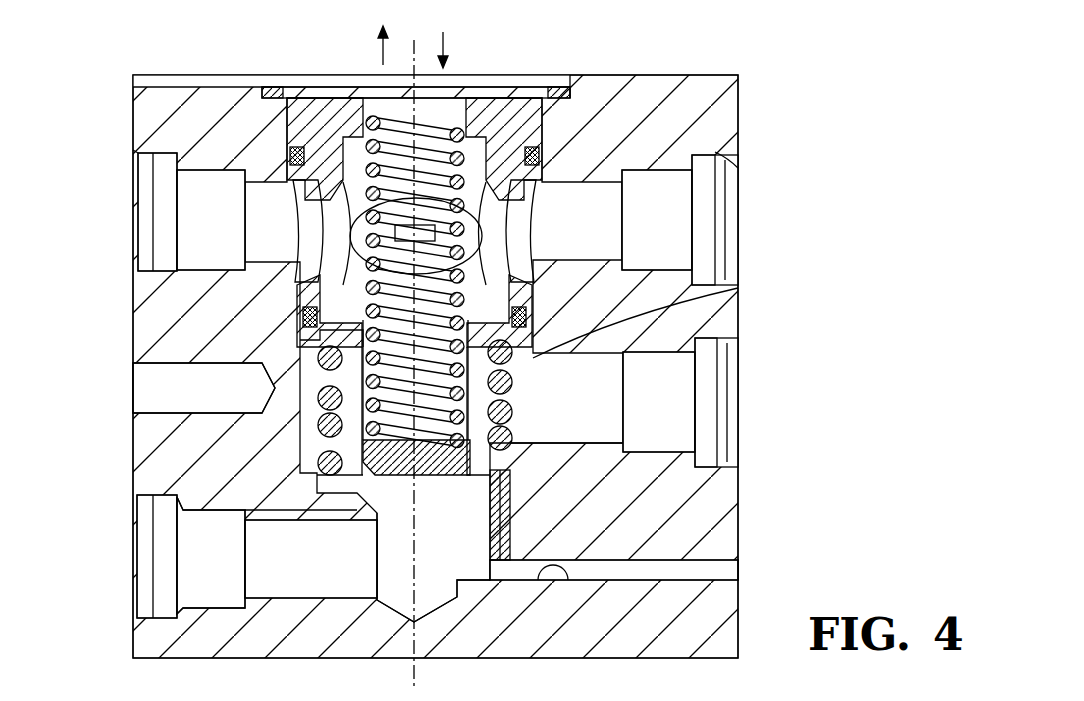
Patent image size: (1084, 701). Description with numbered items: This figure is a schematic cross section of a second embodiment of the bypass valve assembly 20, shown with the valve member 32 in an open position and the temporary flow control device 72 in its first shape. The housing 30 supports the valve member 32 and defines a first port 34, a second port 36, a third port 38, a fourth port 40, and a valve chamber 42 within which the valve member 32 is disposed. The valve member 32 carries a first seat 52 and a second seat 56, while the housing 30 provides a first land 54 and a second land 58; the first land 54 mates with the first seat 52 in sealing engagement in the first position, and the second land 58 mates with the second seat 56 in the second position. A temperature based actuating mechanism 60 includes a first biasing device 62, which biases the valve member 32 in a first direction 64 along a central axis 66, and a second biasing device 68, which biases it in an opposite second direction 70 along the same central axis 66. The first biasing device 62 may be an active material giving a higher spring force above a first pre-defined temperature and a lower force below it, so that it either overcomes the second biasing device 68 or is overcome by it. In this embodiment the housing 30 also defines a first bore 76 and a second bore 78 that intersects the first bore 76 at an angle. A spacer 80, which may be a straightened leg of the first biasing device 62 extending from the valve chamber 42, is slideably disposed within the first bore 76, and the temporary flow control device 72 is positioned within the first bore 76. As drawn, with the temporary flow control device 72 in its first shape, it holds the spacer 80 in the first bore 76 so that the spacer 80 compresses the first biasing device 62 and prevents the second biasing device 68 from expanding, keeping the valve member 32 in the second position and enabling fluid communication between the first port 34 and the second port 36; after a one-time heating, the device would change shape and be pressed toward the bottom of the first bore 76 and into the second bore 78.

The bypass valve assembly 20 is at (708, 62).
The housing 30 is at (722, 112).
The valve member 32 is at (535, 450).
The first port 34 is at (725, 350).
The second port 36 is at (150, 598).
The third port 38 is at (145, 168).
The fourth port 40 is at (722, 155).
The valve chamber 42 is at (738, 300).
The first seat 52 is at (357, 484).
The first land 54 is at (380, 525).
The second seat 56 is at (318, 293).
The second land 58 is at (332, 298).
The temperature based actuating mechanism 60 is at (472, 290).
The first biasing device 62 is at (268, 403).
The first direction 64 is at (380, 55).
The central axis 66 is at (420, 678).
The second biasing device 68 is at (455, 188).
The second direction 70 is at (446, 44).
The temporary flow control device 72 is at (512, 508).
The first bore 76 is at (452, 520).
The second bore 78 is at (555, 572).
The spacer 80 is at (515, 487).